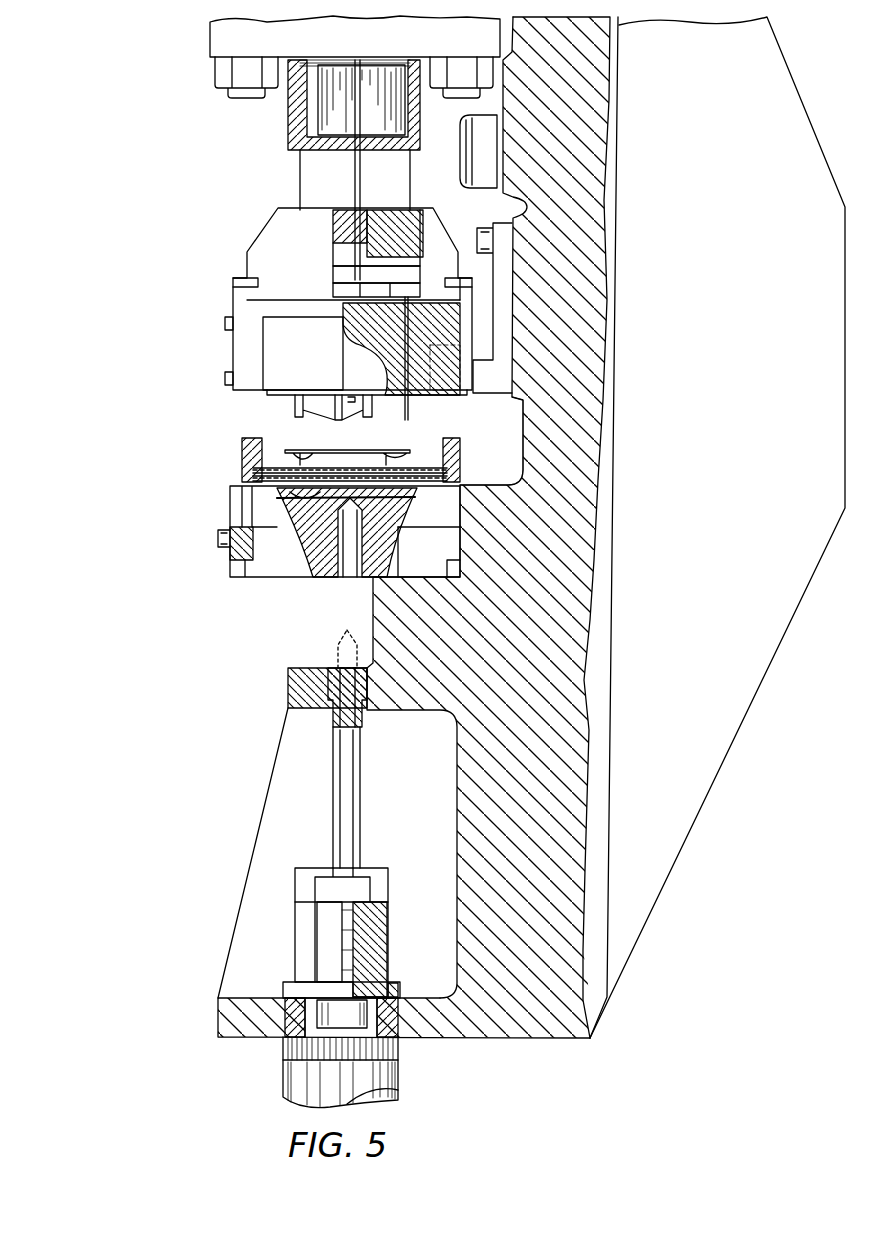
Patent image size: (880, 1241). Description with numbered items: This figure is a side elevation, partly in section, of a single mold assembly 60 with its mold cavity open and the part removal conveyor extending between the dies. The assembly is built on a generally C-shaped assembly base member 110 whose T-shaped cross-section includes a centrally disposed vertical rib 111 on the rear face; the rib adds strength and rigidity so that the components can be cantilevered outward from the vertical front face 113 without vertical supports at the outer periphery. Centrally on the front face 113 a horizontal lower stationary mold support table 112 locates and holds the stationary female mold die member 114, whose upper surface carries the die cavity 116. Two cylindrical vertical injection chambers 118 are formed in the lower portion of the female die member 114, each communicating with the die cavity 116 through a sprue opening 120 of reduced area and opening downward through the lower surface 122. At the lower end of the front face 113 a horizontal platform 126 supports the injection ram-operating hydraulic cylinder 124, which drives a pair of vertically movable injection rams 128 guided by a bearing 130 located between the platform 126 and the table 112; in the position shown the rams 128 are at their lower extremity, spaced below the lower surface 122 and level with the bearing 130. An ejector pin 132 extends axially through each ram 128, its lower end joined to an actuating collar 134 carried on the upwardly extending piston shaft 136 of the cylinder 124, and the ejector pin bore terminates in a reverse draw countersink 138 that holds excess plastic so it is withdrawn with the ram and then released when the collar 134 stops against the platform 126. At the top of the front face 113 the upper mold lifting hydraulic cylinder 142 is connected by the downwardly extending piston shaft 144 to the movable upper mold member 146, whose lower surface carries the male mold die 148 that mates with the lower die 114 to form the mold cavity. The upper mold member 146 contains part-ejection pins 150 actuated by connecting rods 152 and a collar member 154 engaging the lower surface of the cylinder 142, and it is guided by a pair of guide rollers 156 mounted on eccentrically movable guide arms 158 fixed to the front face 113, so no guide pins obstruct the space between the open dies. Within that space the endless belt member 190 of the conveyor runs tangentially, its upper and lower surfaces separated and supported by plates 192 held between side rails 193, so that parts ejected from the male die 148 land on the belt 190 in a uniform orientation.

The mold assembly 60 is at (140, 288).
The assembly base member 110 is at (585, 316).
The vertical rib 111 is at (712, 479).
The lower stationary mold support table 112 is at (228, 556).
The vertical front face 113 is at (522, 439).
The female mold die member 114 is at (323, 538).
The die cavity 116 is at (405, 496).
The injection chambers 118 is at (358, 550).
The sprue opening 120 is at (262, 505).
The lower surface 122 is at (281, 578).
The injection ram-operating hydraulic cylinder 124 is at (397, 1077).
The horizontal platform 126 is at (228, 1020).
The injection rams 128 is at (343, 792).
The bearing 130 is at (297, 680).
The ejector pin 132 is at (338, 715).
The actuating collar 134 is at (323, 942).
The piston shaft 136 is at (288, 1032).
The reverse draw countersink 138 is at (338, 668).
The upper mold lifting hydraulic cylinder 142 is at (353, 48).
The piston shaft 144 is at (365, 127).
The upper mold member 146 is at (315, 346).
The male mold die 148 is at (313, 392).
The part-ejection pins 150 is at (360, 422).
The connecting rods 152 is at (335, 222).
The collar member 154 is at (290, 113).
The guide rollers 156 is at (455, 395).
The guide arms 158 is at (367, 347).
The belt member 190 is at (420, 467).
The plates 192 is at (246, 487).
The side rails 193 is at (242, 443).